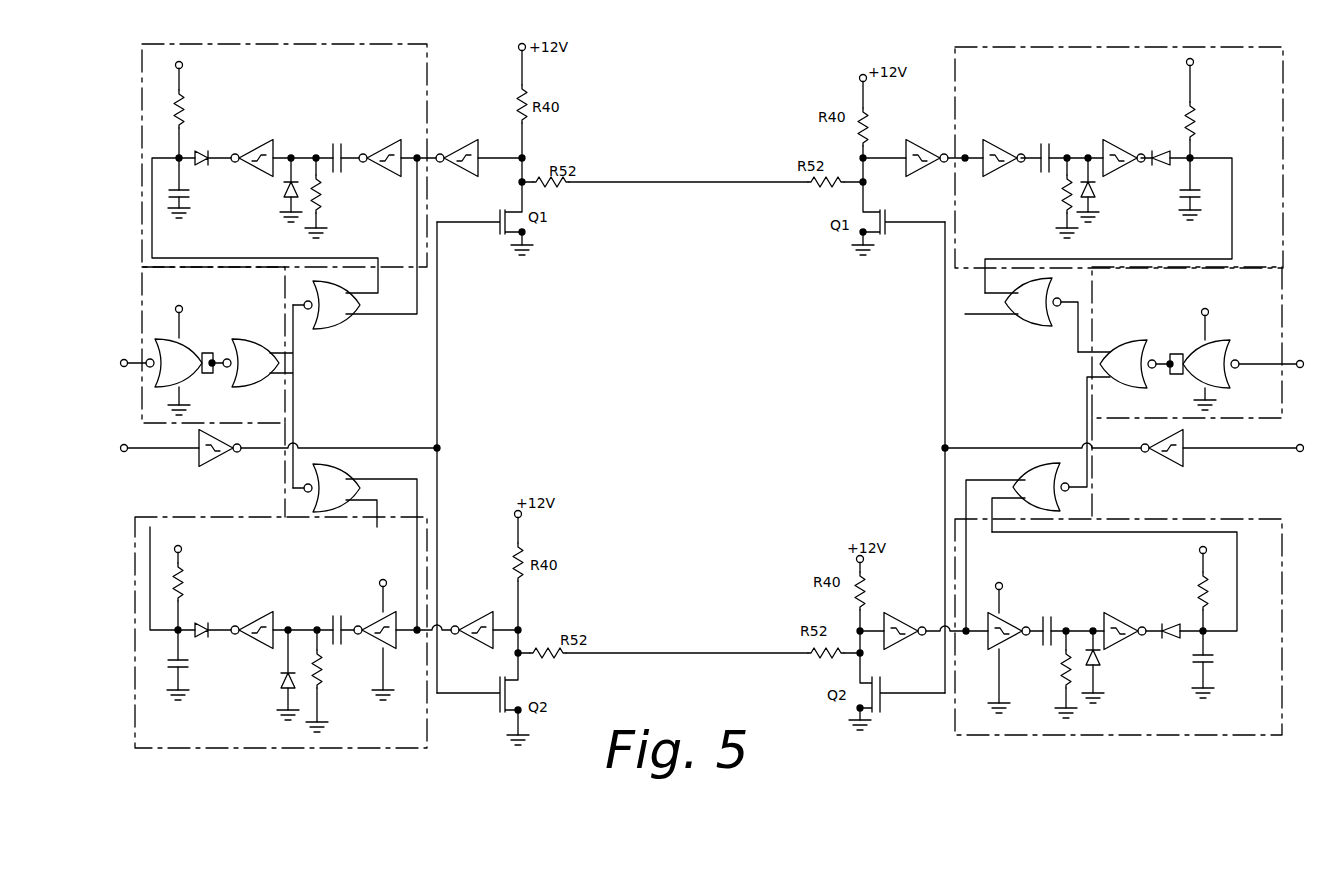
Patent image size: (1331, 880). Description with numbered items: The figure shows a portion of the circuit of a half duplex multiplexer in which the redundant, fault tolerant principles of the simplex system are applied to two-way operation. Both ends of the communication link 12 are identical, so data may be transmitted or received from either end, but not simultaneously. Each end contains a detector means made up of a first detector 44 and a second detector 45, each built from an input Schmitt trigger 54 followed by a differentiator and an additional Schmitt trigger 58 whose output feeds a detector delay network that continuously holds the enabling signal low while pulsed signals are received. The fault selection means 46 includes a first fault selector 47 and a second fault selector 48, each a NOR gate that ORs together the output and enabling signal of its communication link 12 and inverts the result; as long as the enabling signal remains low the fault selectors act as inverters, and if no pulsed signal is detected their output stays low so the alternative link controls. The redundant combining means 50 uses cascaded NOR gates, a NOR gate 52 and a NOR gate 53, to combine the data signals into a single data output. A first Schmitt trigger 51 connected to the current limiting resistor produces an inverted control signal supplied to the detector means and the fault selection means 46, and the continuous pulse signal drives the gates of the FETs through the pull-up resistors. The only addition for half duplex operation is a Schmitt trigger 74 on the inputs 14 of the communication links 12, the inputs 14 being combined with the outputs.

The communication link 12 is at (683, 181).
The input 14 is at (125, 452).
The first detector 44 is at (428, 102).
The second detector 45 is at (238, 748).
The fault selection means 46 is at (428, 328).
The first fault selector 47 is at (338, 320).
The second fault selector 48 is at (352, 470).
The redundant combining means 50 is at (138, 300).
The first Schmitt trigger 51 is at (463, 147).
The NOR gate 52 is at (252, 345).
The NOR gate 53 is at (182, 350).
The input Schmitt trigger 54 is at (385, 147).
The additional Schmitt trigger 58 is at (258, 146).
The Schmitt trigger 74 is at (218, 463).